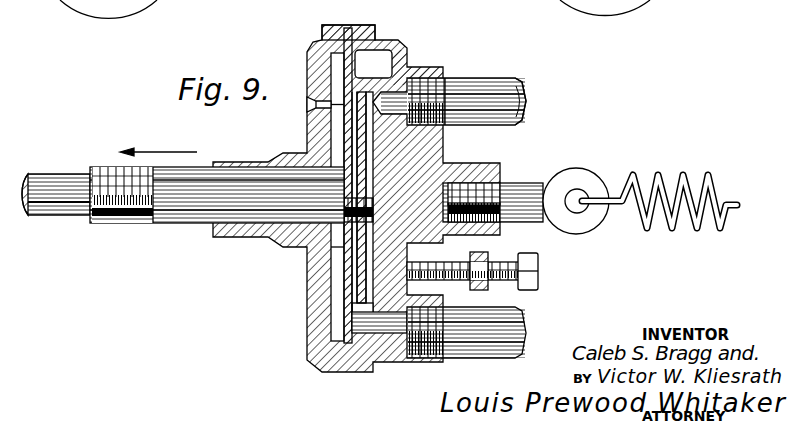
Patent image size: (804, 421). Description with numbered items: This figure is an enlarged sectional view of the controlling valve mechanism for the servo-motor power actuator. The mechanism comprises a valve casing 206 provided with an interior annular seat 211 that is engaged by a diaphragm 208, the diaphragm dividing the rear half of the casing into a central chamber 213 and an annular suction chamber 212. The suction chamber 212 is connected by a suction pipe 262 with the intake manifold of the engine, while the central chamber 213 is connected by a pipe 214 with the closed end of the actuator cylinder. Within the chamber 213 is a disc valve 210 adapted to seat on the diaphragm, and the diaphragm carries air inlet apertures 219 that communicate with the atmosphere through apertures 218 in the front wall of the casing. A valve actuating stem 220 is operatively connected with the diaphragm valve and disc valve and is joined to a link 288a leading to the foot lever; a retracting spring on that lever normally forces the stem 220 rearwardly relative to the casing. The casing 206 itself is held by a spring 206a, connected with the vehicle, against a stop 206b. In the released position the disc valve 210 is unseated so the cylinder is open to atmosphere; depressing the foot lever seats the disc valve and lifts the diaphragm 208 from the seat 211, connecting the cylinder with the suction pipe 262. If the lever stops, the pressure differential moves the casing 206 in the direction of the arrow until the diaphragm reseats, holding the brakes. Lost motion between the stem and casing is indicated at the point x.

The valve casing 206 is at (326, 30).
The spring 206a is at (661, 176).
The stop 206b is at (539, 268).
The diaphragm 208 is at (307, 57).
The disc valve 210 is at (372, 137).
The annular seat 211 is at (400, 57).
The annular suction chamber 212 is at (372, 63).
The central chamber 213 is at (415, 79).
The pipe 214 is at (524, 93).
The apertures 218 is at (308, 103).
The air inlet apertures 219 is at (345, 131).
The valve actuating stem 220 is at (178, 214).
The suction pipe 262 is at (524, 325).
The link 288a is at (58, 167).
The point of lost motion x is at (340, 248).